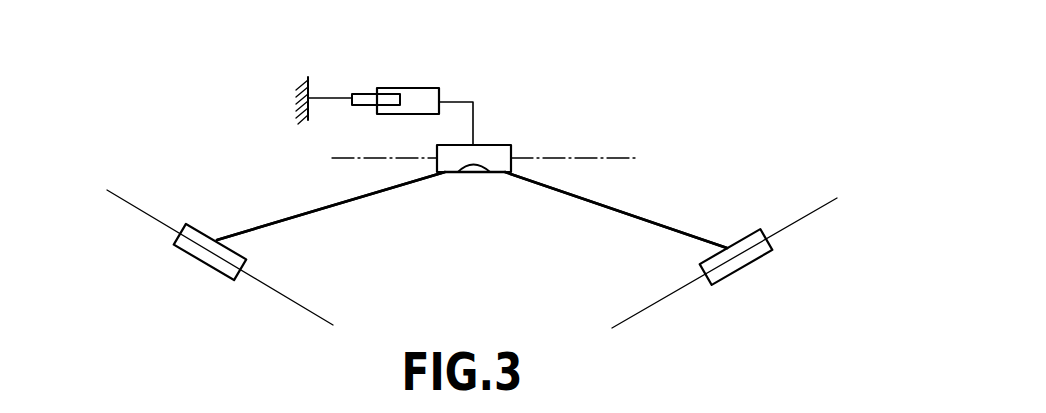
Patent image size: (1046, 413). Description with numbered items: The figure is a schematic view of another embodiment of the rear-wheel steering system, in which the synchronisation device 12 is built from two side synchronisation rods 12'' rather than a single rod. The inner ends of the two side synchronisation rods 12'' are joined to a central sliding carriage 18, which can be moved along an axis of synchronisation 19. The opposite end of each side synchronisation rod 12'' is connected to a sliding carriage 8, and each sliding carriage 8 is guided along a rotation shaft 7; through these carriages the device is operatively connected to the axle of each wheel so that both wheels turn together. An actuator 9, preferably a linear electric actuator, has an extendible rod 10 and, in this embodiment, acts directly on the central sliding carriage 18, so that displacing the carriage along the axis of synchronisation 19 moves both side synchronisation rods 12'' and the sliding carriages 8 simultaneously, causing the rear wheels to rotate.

The rotation shaft 7 is at (132, 205).
The sliding carriage 8 is at (197, 237).
The actuator 9 is at (353, 90).
The extendible rod 10 is at (415, 92).
The synchronisation device 12 is at (472, 222).
The side synchronisation rod 12'' is at (472, 220).
The central sliding carriage 18 is at (482, 153).
The axis of synchronisation 19 is at (593, 158).